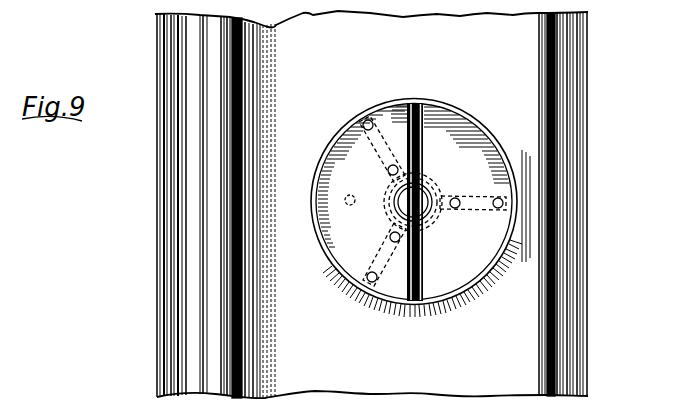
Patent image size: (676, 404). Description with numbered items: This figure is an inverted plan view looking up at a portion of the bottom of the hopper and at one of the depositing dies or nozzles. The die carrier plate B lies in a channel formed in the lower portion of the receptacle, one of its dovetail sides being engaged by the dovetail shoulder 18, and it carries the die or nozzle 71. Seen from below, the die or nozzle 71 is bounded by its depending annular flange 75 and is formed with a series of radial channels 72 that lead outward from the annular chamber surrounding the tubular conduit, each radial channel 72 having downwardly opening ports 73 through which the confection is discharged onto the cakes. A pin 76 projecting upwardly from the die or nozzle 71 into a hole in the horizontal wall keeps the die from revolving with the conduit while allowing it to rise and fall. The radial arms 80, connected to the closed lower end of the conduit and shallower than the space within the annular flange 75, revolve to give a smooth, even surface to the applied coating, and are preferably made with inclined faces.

The die carrier plate B is at (158, 244).
The dovetail shoulder 18 is at (558, 206).
The die or nozzle 71 is at (425, 184).
The radial channels 72 is at (373, 149).
The downwardly opening ports 73 is at (389, 241).
The depending annular flange 75 is at (470, 122).
The pin 76 is at (350, 206).
The radial arms 80 is at (423, 165).